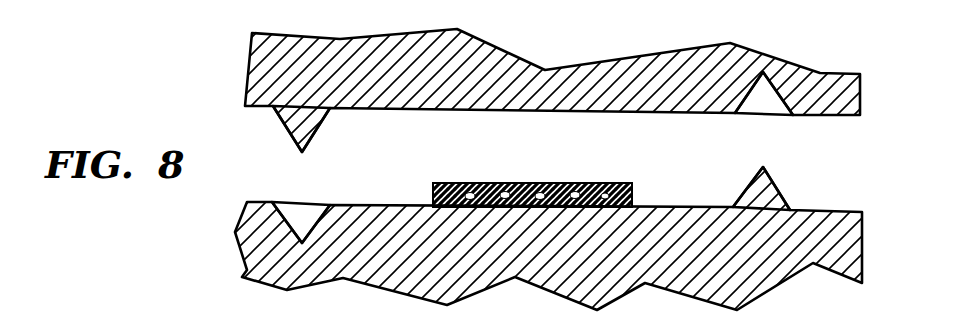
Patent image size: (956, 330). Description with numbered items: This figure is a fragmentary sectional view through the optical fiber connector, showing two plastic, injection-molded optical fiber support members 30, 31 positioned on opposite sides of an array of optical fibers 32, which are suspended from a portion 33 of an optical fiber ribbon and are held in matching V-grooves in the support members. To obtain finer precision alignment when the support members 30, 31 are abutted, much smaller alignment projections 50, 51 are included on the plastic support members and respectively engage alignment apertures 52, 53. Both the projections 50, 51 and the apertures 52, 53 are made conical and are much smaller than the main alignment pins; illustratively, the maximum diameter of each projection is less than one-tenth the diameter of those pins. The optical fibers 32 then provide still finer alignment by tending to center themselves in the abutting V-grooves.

The optical fiber support member 30 is at (634, 63).
The optical fiber support member 31 is at (245, 248).
The optical fibers 32 is at (533, 183).
The portion of optical fiber ribbon 33 is at (455, 181).
The alignment projection 50 is at (280, 123).
The alignment projection 51 is at (787, 198).
The alignment aperture 52 is at (767, 90).
The alignment aperture 53 is at (300, 232).